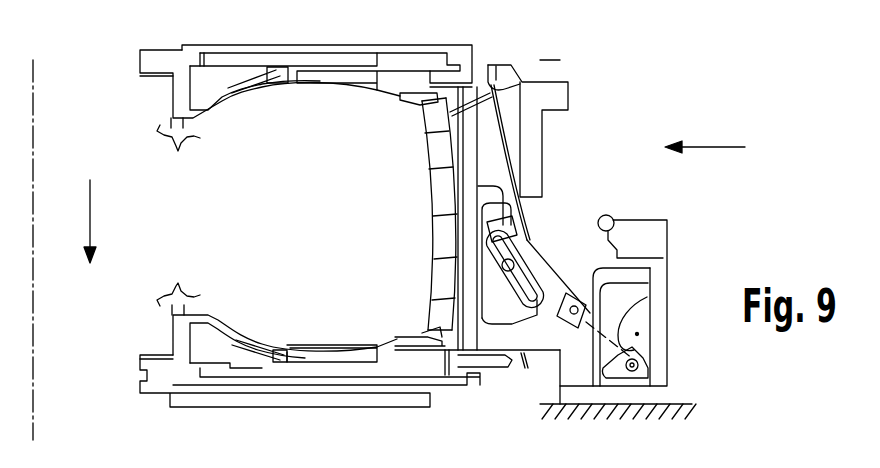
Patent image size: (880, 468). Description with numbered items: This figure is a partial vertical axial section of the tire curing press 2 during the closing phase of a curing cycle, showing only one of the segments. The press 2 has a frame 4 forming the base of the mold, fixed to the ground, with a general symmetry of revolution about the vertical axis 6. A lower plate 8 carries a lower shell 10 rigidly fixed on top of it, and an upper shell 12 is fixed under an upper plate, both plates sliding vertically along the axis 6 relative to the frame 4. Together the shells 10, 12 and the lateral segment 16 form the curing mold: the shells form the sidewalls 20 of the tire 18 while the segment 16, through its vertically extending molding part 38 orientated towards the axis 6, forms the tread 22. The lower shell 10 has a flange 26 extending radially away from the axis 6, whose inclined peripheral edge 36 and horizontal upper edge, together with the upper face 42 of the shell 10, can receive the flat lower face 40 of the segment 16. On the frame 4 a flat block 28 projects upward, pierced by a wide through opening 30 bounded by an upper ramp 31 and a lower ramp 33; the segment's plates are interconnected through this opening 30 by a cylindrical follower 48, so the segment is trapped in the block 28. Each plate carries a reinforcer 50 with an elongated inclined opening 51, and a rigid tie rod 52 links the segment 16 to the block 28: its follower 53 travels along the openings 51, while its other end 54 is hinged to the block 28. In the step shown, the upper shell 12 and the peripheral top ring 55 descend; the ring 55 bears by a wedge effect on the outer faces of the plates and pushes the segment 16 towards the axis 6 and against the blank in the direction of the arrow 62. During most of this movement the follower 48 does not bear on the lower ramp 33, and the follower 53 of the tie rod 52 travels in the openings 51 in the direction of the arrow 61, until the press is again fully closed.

The press 2 is at (625, 92).
The frame 4 is at (665, 395).
The vertical axis 6 is at (32, 115).
The lower plate 8 is at (307, 396).
The lower shell 10 is at (399, 378).
The upper shell 12 is at (407, 45).
The lateral segment 16 is at (528, 145).
The tire 18 is at (178, 146).
The sidewall 20 is at (243, 78).
The tread 22 is at (412, 123).
The flange 26 is at (493, 367).
The block 28 is at (655, 305).
The through opening 30 is at (640, 334).
The upper ramp 31 is at (633, 318).
The lower ramp 33 is at (640, 345).
The peripheral edge 36 is at (490, 305).
The molding part 38 is at (488, 88).
The lower face 40 is at (523, 358).
The upper face 42 is at (447, 352).
The follower 48 is at (648, 350).
The reinforcer 50 is at (478, 186).
The opening 51 is at (530, 234).
The tie rod 52 is at (487, 232).
The follower 53 is at (497, 257).
The other end 54 is at (593, 300).
The peripheral top ring 55 is at (520, 120).
The arrow 61 is at (77, 221).
The arrow 62 is at (705, 136).